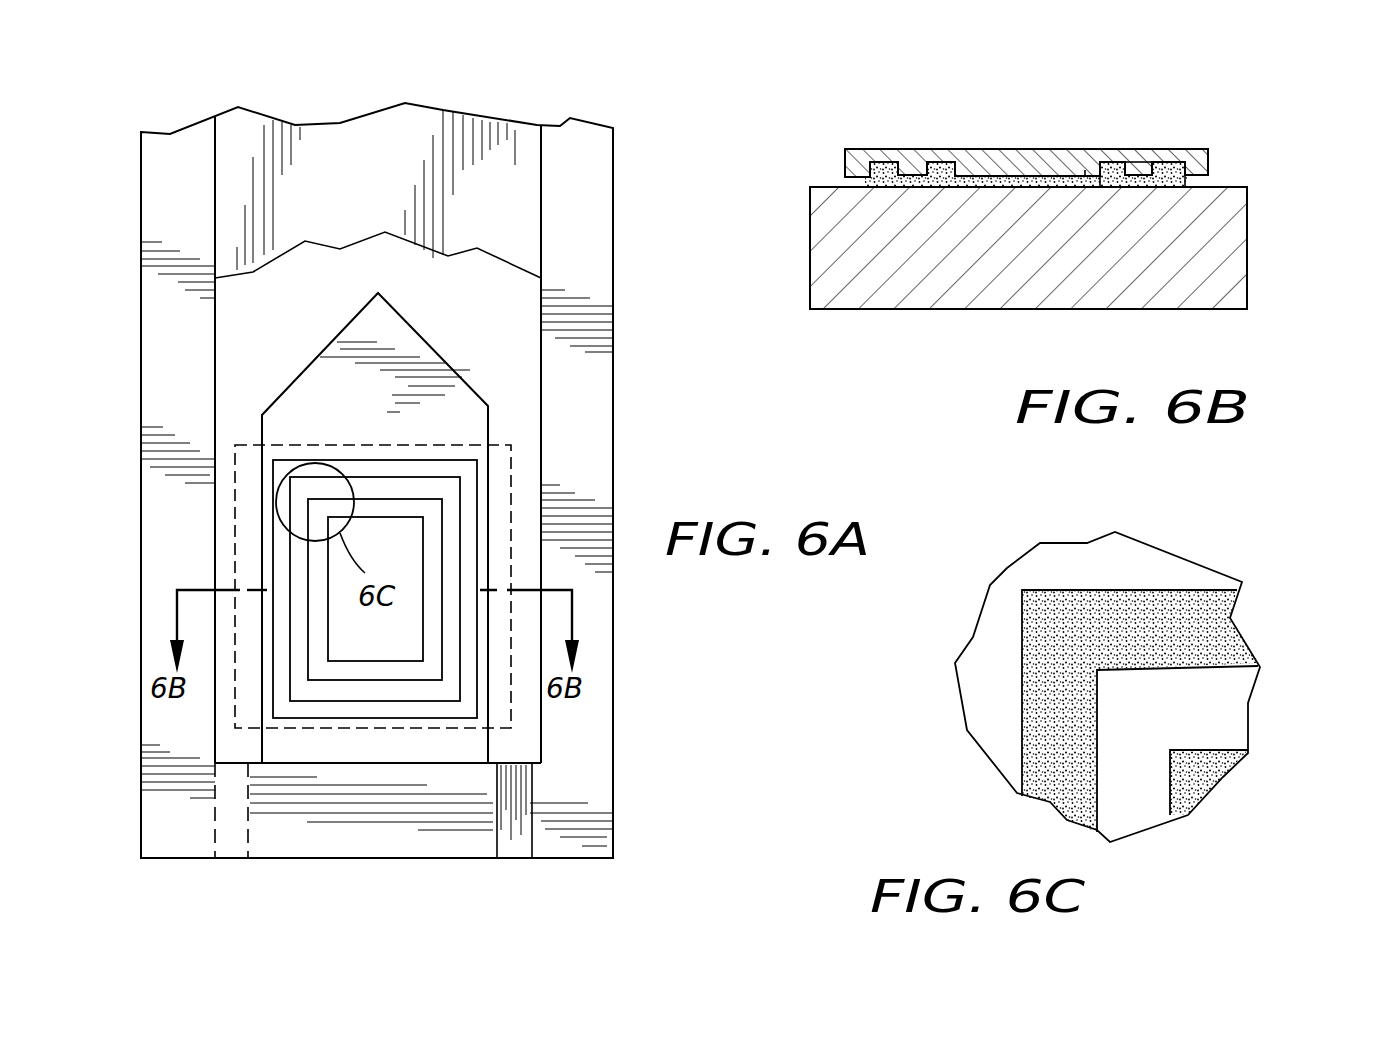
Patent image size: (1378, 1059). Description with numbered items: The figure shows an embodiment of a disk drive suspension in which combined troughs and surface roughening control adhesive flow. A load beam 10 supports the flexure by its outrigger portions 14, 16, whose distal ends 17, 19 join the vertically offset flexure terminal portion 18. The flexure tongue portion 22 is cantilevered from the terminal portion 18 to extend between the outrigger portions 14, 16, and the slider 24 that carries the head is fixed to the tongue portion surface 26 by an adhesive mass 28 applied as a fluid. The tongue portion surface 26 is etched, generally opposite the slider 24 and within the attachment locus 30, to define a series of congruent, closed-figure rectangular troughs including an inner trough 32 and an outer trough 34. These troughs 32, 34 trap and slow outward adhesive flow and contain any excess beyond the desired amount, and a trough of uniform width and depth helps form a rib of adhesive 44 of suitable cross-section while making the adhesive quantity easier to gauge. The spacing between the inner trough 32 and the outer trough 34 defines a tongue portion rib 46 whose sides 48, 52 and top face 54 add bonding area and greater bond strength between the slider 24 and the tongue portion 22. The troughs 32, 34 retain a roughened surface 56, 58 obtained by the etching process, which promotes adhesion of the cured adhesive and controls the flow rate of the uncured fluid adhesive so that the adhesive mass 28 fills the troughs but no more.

In FIG. 6A, the load beam 10 is at (460, 130).
In FIG. 6A, the outrigger portion 14 is at (157, 163).
In FIG. 6A, the outrigger portion 16 is at (580, 150).
In FIG. 6A, the distal end 17 is at (187, 845).
In FIG. 6A, the flexure terminal portion 18 is at (385, 845).
In FIG. 6A, the distal end 19 is at (558, 862).
In FIG. 6A, the flexure tongue portion 22 is at (418, 372).
In FIG. 6A, the slider 24 is at (512, 495).
In FIG. 6B, the slider 24 is at (1200, 312).
In FIG. 6B, the tongue portion surface 26 is at (1085, 173).
In FIG. 6B, the adhesive mass 28 is at (1050, 180).
In FIG. 6C, the adhesive mass 28 is at (1042, 670).
In FIG. 6A, the attachment locus 30 is at (401, 650).
In FIG. 6B, the attachment locus 30 is at (988, 178).
In FIG. 6B, the inner trough 32 is at (1123, 163).
In FIG. 6B, the outer trough 34 is at (876, 160).
In FIG. 6B, the rib of adhesive 44 is at (1180, 167).
In FIG. 6B, the tongue portion rib 46 is at (912, 156).
In FIG. 6B, the side of tongue portion rib 48 is at (1100, 185).
In FIG. 6B, the side of tongue portion rib 52 is at (1187, 180).
In FIG. 6B, the top face of tongue portion rib 54 is at (1137, 174).
In FIG. 6C, the roughened surface 56 is at (1200, 782).
In FIG. 6C, the roughened surface 58 is at (1137, 637).